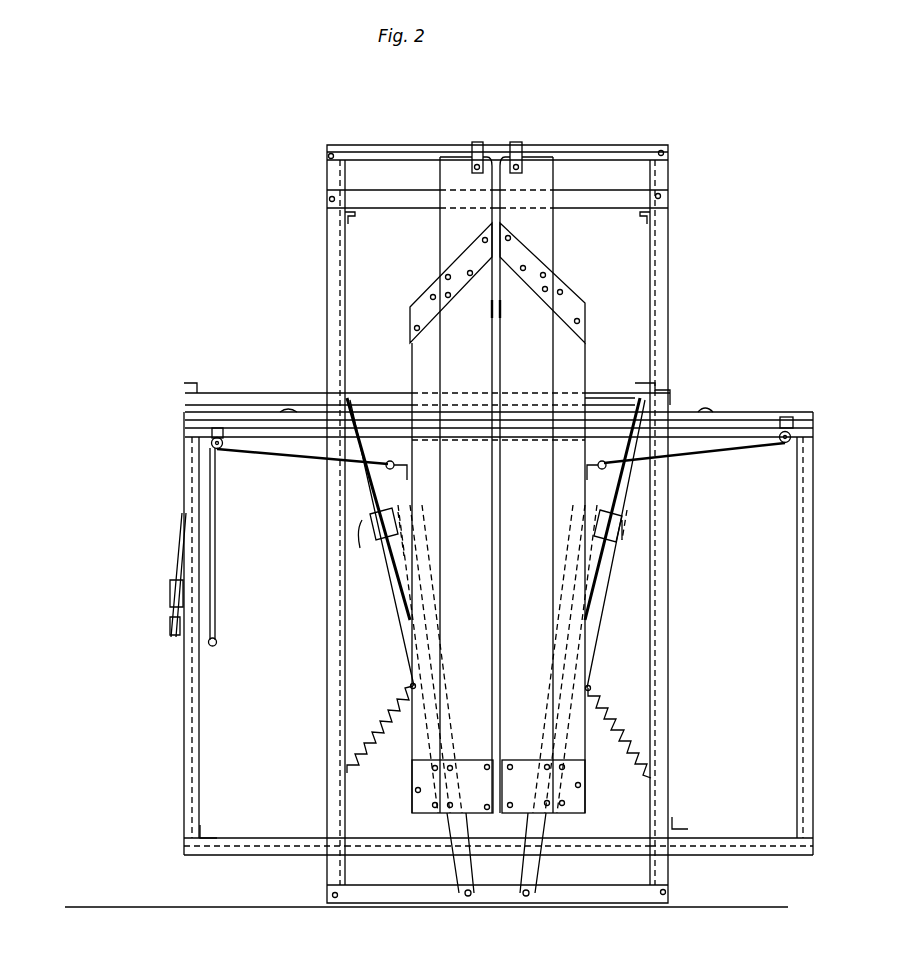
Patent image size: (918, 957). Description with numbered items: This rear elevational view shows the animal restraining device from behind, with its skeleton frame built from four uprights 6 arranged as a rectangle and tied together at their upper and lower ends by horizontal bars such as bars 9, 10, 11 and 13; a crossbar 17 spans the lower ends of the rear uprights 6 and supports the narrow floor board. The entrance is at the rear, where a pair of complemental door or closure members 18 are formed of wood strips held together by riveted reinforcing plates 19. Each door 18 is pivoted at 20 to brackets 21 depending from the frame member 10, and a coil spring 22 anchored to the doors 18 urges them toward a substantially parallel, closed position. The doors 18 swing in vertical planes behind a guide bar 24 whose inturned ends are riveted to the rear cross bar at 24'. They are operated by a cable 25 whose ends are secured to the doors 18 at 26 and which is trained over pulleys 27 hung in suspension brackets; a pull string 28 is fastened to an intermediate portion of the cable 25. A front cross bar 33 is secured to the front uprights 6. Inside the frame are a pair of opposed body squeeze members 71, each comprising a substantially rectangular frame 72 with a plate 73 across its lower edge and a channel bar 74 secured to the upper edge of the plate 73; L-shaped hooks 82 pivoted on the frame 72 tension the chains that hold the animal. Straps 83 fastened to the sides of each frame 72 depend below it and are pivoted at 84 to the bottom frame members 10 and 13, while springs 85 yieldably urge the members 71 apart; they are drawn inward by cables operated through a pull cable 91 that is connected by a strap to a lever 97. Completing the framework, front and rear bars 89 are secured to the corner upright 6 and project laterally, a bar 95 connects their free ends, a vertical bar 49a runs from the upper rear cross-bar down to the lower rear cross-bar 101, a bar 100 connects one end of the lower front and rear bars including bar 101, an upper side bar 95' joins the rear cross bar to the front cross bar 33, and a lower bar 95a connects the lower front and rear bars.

The uprights 6 is at (325, 321).
The horizontal bar 9 is at (348, 214).
The horizontal bar 10 is at (600, 152).
The horizontal bar 11 is at (601, 209).
The horizontal bar 13 is at (570, 900).
The crossbar 17 is at (630, 848).
The door or closure members 18 is at (415, 372).
The reinforcing plates 19 is at (460, 291).
The pivot 20 is at (475, 176).
The brackets 21 is at (516, 140).
The coil spring 22 is at (498, 312).
The guide bar 24 is at (461, 492).
The riveted inturned ends 24' is at (499, 401).
The cable 25 is at (302, 452).
The cable end connections 26 is at (410, 463).
The pulleys 27 is at (223, 450).
The pull string 28 is at (217, 603).
The front cross bar 33 is at (228, 420).
The vertical bar 49a is at (188, 783).
The body squeeze members 71 is at (413, 513).
The rectangular frame 72 is at (402, 628).
The plate 73 is at (445, 822).
The channel bar 74 is at (452, 722).
The L-shaped hook 82 is at (368, 548).
The straps 83 is at (458, 865).
The pivot 84 is at (467, 899).
The springs 85 is at (372, 745).
The front and rear bars 89 is at (615, 390).
The pull cable 91 is at (177, 550).
The bar 95 is at (194, 371).
The upper side bar 95' is at (675, 385).
The lower bar 95a is at (687, 823).
The lever 97 is at (172, 620).
The bar 100 is at (213, 837).
The lower rear cross-bar 101 is at (277, 855).